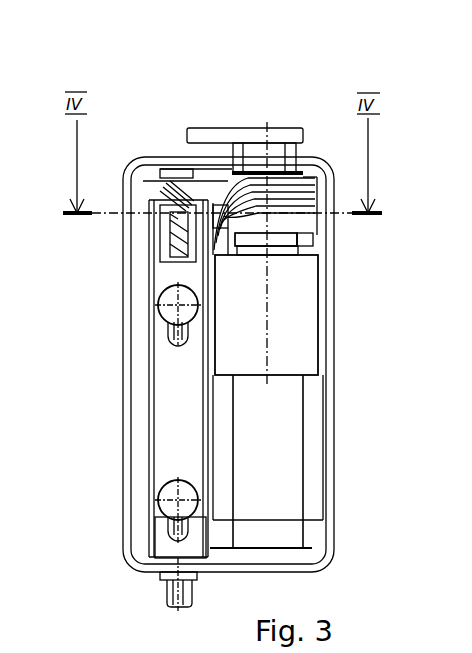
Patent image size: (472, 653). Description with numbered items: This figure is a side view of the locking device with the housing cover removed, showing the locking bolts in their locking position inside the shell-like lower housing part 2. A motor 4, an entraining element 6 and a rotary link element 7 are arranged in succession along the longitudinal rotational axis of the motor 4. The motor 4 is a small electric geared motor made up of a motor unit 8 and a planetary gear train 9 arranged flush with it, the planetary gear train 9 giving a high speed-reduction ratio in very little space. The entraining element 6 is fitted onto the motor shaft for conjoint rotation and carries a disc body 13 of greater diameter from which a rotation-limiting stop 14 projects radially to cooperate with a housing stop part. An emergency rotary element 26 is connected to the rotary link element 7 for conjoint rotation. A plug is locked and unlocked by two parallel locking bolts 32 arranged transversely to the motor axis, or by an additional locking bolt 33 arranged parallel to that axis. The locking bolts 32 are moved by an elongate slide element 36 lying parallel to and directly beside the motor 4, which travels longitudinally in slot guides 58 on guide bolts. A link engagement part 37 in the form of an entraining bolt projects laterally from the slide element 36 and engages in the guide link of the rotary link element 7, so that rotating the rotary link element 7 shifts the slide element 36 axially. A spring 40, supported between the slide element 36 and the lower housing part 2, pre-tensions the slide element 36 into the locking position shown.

The lower housing part 2 is at (328, 356).
The motor 4 is at (310, 392).
The entraining element 6 is at (276, 240).
The rotary link element 7 is at (278, 190).
The motor unit 8 is at (288, 491).
The planetary gear train 9 is at (303, 323).
The disc body 13 is at (276, 240).
The rotation-limiting stop 14 is at (298, 238).
The emergency rotary element 26 is at (254, 130).
The locking bolts 32 is at (165, 318).
The additional locking bolt 33 is at (170, 597).
The slide element 36 is at (176, 409).
The link engagement part 37 is at (216, 211).
The spring 40 is at (177, 177).
The slot guides 58 is at (176, 332).